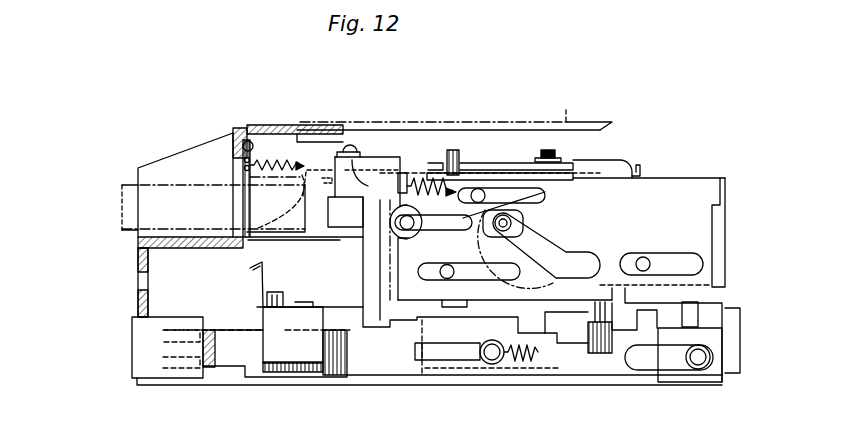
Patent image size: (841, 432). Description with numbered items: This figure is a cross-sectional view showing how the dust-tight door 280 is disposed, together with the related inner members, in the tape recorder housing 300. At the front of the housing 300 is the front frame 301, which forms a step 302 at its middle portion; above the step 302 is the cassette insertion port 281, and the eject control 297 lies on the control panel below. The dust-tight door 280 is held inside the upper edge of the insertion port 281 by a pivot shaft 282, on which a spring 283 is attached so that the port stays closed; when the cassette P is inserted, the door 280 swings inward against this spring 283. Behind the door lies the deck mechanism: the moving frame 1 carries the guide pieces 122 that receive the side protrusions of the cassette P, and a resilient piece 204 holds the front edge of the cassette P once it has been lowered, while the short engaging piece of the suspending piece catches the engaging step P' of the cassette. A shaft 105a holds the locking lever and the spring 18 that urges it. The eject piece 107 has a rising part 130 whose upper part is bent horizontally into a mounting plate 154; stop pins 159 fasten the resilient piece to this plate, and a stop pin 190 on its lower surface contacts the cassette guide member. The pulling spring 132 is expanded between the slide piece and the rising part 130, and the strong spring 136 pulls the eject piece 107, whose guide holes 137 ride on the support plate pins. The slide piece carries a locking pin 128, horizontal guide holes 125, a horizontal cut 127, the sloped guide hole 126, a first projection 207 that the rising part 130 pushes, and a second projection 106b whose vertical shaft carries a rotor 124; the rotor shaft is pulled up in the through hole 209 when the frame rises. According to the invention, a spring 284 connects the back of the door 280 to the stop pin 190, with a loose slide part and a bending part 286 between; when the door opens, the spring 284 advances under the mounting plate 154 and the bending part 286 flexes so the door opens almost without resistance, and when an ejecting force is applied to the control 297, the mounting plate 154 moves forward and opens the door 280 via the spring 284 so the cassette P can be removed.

The cassette P is at (102, 193).
The engaging step P' is at (189, 158).
The step 302 is at (137, 238).
The dust-tight door 280 is at (240, 198).
The pivot shaft 282 is at (246, 132).
The front frame 301 is at (268, 125).
The spring 283 is at (287, 126).
The cassette insertion port 281 is at (230, 186).
The bending part 286 is at (270, 168).
The spring 284 is at (298, 176).
The guide piece 122 is at (342, 218).
The mounting plate 154 is at (375, 163).
The stop pin 159 is at (351, 153).
The stop pin 190 is at (400, 190).
The rising part 130 is at (363, 279).
The pulling spring 132 is at (417, 186).
The locking pin 128 is at (453, 150).
The shaft 105a is at (553, 150).
The spring 18 is at (575, 160).
The moving frame 1 is at (603, 175).
The tape recorder housing 300 is at (483, 122).
The second projection 106b is at (600, 300).
The horizontal cut 127 is at (547, 196).
The fourth sloped guide hole 126 is at (543, 230).
The through hole 209 is at (540, 266).
The horizontal guide hole 125 is at (517, 187).
The first projection 207 is at (455, 307).
The guide hole 137 is at (447, 362).
The strong spring 136 is at (547, 364).
The rotor 124 is at (597, 352).
The eject control 297 is at (155, 372).
The eject piece 107 is at (260, 370).
The resilient piece 204 is at (258, 281).